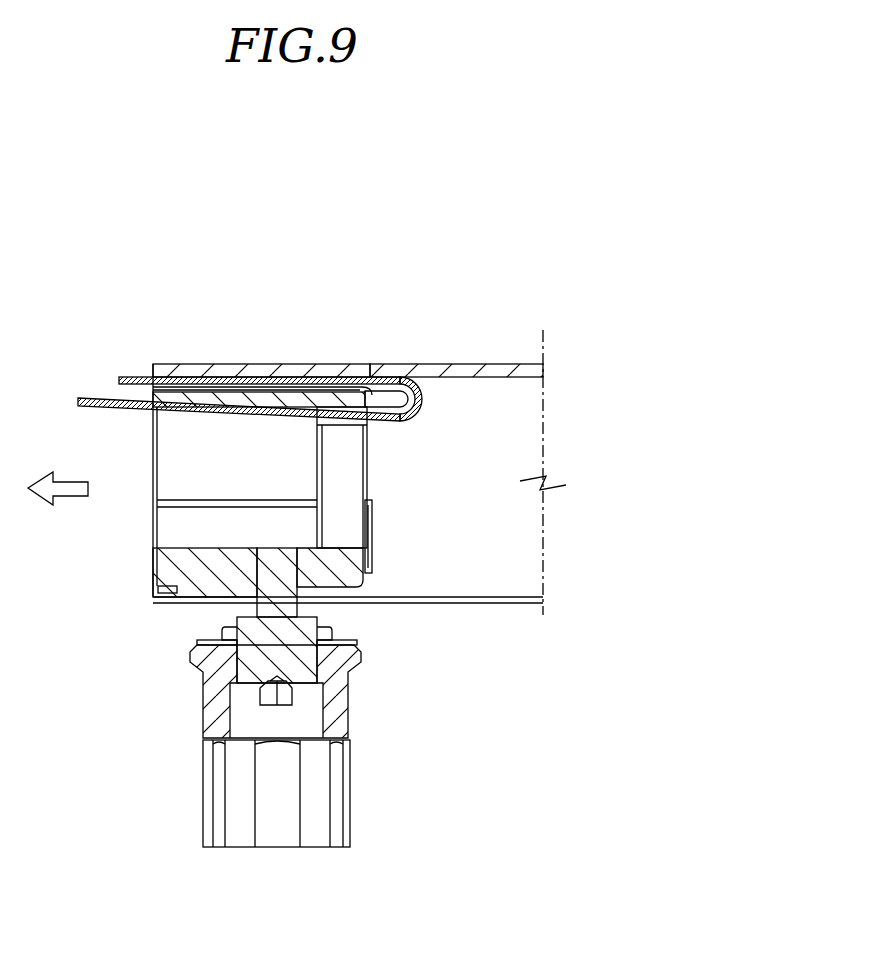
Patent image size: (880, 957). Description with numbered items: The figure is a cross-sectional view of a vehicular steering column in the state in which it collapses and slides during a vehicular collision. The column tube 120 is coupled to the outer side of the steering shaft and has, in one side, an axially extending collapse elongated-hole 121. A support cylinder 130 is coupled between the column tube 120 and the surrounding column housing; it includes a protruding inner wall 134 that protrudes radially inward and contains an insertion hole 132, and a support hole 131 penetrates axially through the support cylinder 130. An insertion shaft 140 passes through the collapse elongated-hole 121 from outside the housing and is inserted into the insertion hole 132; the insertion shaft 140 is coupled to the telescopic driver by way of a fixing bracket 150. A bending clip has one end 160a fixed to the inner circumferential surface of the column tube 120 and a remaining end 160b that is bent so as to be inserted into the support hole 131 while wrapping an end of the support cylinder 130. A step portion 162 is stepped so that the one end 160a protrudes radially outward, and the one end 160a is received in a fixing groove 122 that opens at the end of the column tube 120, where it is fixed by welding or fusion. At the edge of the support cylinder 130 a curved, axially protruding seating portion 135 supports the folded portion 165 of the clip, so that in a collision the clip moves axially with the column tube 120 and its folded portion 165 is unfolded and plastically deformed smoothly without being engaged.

The column tube 120 is at (430, 372).
The collapse elongated-hole 121 is at (485, 603).
The fixing groove 122 is at (247, 372).
The support cylinder 130 is at (158, 567).
The support hole 131 is at (333, 392).
The insertion hole 132 is at (257, 555).
The protruding inner wall 134 is at (180, 606).
The seating portion 135 is at (375, 398).
The insertion shaft 140 is at (308, 657).
The fixing bracket 150 is at (343, 712).
The one end of bending clip 160a is at (133, 377).
The remaining end of bending clip 160b is at (80, 397).
The step portion 162 is at (372, 386).
The folded portion 165 is at (422, 397).